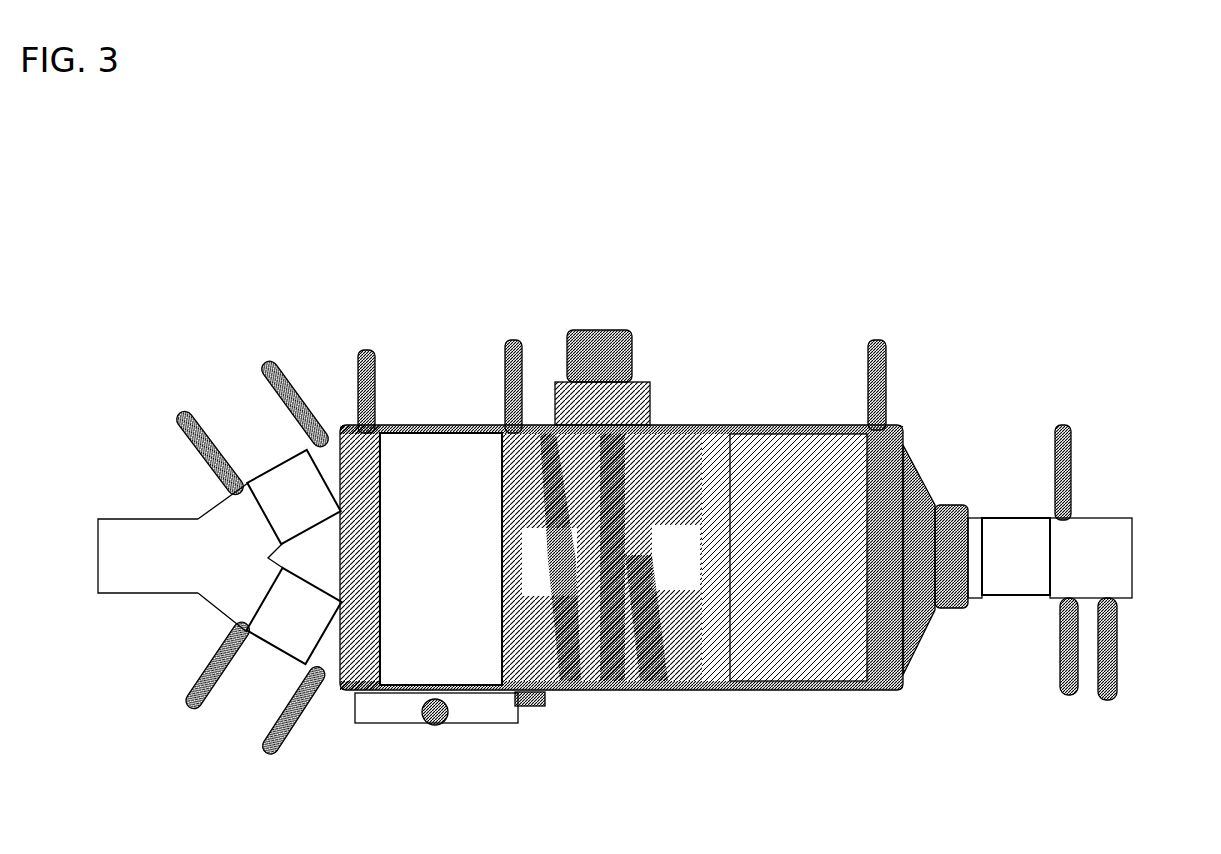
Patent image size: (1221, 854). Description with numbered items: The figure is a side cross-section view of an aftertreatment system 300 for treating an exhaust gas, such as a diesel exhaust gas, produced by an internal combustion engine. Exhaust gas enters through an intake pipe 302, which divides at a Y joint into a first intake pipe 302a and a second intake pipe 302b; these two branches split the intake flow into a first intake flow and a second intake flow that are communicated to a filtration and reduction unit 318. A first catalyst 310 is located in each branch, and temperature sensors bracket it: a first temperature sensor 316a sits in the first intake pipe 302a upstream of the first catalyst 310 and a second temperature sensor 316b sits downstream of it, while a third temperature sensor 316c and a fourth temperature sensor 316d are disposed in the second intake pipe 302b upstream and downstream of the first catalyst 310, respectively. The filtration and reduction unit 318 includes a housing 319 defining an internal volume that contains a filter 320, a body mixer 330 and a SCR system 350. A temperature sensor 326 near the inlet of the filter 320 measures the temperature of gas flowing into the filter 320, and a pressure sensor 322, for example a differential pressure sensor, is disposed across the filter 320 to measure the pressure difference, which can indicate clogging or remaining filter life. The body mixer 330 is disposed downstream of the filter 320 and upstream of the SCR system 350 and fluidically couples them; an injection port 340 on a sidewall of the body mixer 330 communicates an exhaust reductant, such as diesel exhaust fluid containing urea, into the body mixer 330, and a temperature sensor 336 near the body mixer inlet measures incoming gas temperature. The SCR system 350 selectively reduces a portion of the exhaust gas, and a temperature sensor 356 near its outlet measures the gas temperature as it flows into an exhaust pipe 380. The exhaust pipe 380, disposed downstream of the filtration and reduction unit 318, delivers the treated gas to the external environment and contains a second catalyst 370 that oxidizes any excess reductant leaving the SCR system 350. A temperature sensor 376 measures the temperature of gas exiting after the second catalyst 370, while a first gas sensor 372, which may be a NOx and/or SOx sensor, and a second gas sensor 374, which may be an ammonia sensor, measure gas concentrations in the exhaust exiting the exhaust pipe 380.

The aftertreatment system 300 is at (325, 195).
The intake pipe 302 is at (122, 593).
The first intake pipe 302a is at (198, 517).
The second intake pipe 302b is at (199, 597).
The first catalyst 310 is at (268, 472).
The first temperature sensor 316a is at (181, 414).
The second temperature sensor 316b is at (265, 364).
The third temperature sensor 316c is at (190, 707).
The fourth temperature sensor 316d is at (271, 753).
The filtration and reduction unit 318 is at (572, 283).
The housing 319 is at (808, 425).
The filter 320 is at (432, 462).
The pressure sensor 322 is at (437, 724).
The temperature sensor 326 is at (362, 351).
The body mixer 330 is at (628, 685).
The temperature sensor 336 is at (513, 341).
The injection port 340 is at (630, 380).
The SCR system 350 is at (780, 458).
The temperature sensor 356 is at (878, 341).
The second catalyst 370 is at (1012, 518).
The first gas sensor 372 is at (1050, 672).
The second gas sensor 374 is at (1108, 696).
The temperature sensor 376 is at (1056, 426).
The exhaust pipe 380 is at (1110, 518).